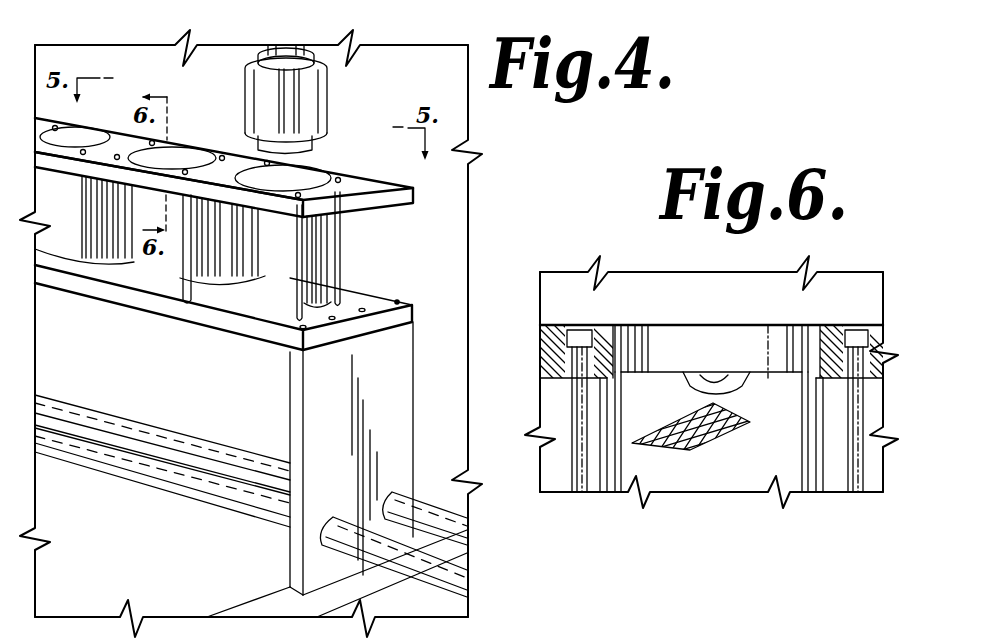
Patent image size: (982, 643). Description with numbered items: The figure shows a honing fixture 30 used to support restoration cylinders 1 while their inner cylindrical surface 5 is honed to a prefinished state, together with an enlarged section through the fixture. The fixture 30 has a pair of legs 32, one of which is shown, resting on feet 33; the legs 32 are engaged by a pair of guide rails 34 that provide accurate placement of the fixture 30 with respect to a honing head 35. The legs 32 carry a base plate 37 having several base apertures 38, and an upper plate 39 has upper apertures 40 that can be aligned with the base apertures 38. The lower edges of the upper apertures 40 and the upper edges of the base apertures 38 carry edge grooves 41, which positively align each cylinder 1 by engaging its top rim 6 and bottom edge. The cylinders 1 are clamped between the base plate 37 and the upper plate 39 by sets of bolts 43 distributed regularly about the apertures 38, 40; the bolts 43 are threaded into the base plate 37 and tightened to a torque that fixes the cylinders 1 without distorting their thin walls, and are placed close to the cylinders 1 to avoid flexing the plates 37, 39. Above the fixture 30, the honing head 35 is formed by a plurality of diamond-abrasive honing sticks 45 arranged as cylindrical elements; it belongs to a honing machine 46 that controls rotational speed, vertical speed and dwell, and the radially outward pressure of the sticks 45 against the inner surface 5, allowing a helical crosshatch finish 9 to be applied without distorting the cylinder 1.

In FIG. 4, the restoration cylinder 1 is at (69, 242).
In FIG. 6, the restoration cylinder 1 is at (599, 489).
In FIG. 6, the inner cylindrical surface 5 is at (665, 478).
In FIG. 6, the top rim 6 is at (646, 336).
In FIG. 6, the helical crosshatch surface finish 9 is at (720, 433).
In FIG. 4, the honing fixture 30 is at (427, 314).
In FIG. 4, the legs 32 is at (290, 412).
In FIG. 4, the feet 33 is at (250, 602).
In FIG. 4, the guide rails 34 is at (100, 457).
In FIG. 4, the honing head 35 is at (310, 89).
In FIG. 4, the base plate 37 is at (227, 325).
In FIG. 4, the base apertures 38 is at (148, 272).
In FIG. 4, the upper plate 39 is at (387, 197).
In FIG. 6, the upper plate 39 is at (548, 332).
In FIG. 4, the upper apertures 40 is at (180, 152).
In FIG. 6, the upper apertures 40 is at (638, 336).
In FIG. 6, the edge grooves 41 is at (725, 372).
In FIG. 4, the bolts 43 is at (193, 309).
In FIG. 6, the bolts 43 is at (578, 486).
In FIG. 4, the honing sticks 45 is at (294, 108).
In FIG. 4, the honing machine 46 is at (252, 48).